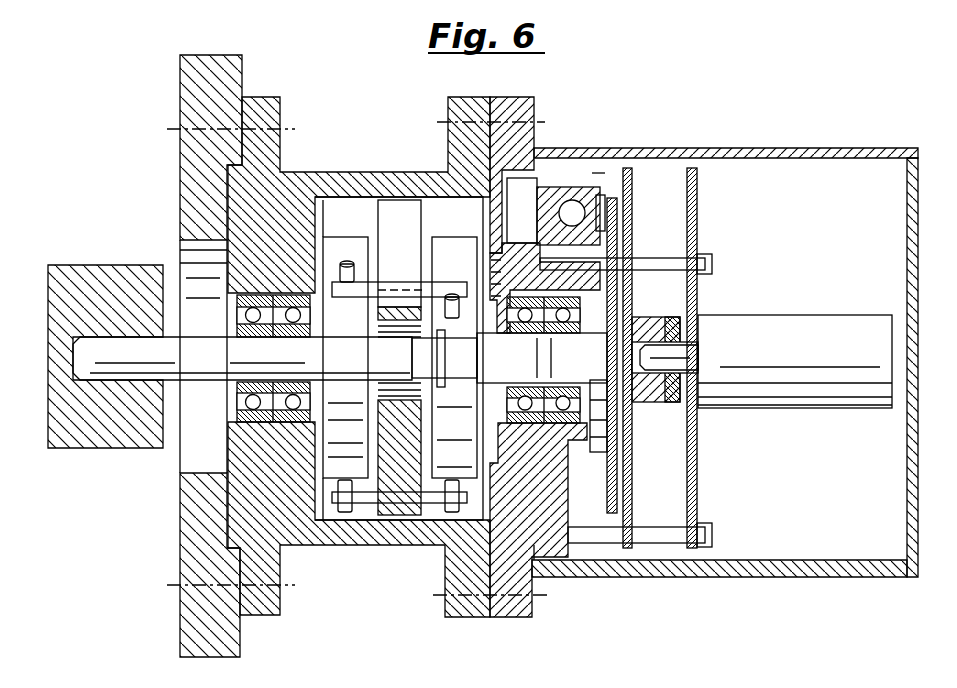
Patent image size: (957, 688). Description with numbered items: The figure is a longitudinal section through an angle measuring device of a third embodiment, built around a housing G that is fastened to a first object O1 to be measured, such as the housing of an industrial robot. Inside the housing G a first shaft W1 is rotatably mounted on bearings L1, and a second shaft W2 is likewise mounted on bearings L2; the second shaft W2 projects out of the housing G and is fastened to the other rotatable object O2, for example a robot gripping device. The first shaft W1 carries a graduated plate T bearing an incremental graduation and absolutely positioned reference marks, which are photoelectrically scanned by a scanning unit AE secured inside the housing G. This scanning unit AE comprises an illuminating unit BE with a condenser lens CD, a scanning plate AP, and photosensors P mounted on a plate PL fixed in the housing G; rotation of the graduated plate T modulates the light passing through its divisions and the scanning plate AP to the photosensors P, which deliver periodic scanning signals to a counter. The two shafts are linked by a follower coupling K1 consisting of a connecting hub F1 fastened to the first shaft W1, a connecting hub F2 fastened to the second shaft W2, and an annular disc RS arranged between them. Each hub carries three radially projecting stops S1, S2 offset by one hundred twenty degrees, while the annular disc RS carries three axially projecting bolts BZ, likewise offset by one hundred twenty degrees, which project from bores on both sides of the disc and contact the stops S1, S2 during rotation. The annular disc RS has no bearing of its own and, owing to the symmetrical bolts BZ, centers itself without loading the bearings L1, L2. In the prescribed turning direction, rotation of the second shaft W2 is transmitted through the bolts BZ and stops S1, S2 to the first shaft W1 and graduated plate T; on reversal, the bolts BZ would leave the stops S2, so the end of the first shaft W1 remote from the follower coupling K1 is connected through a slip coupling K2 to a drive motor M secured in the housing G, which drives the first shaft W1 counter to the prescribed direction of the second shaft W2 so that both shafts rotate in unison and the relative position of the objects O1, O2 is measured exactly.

The object to be measured O1 is at (196, 531).
The rotatable object O2 is at (86, 441).
The housing G is at (372, 168).
The follower coupling K1 is at (333, 226).
The connecting hub F2 is at (352, 245).
The annular disc RS is at (403, 212).
The connecting hub F1 is at (448, 245).
The bolts BZ is at (362, 290).
The stops S2 is at (356, 282).
The stops S1 is at (452, 294).
The second shaft W2 is at (220, 370).
The bearings L2 is at (235, 395).
The first shaft W1 is at (529, 370).
The bearings L1 is at (547, 425).
The slip coupling K2 is at (658, 405).
The drive motor M is at (781, 323).
The photosensors P is at (621, 201).
The graduated plate T is at (619, 286).
The plate PL is at (637, 239).
The illuminating unit BE is at (543, 212).
The condenser lens CD is at (574, 202).
The scanning plate AP is at (604, 200).
The scanning unit AE is at (599, 179).